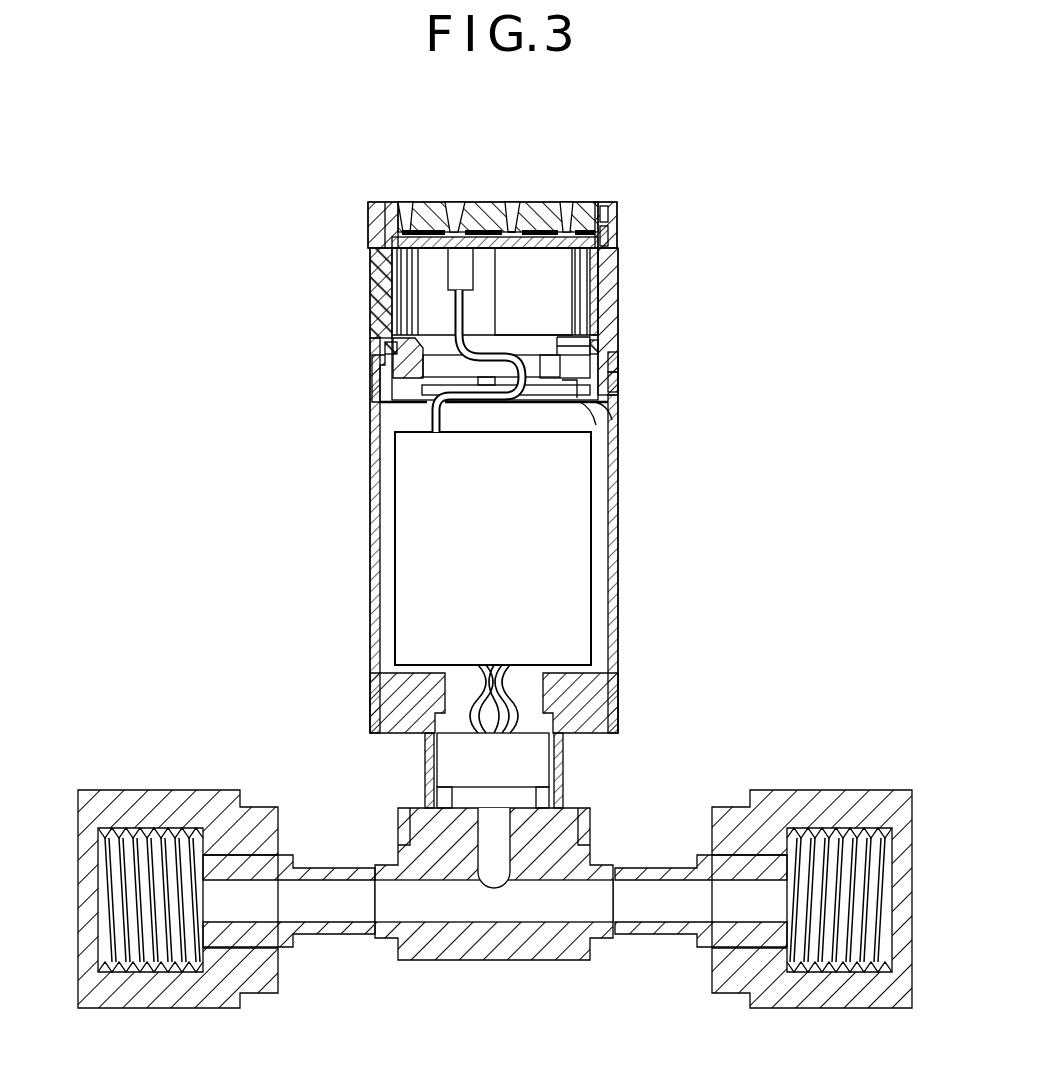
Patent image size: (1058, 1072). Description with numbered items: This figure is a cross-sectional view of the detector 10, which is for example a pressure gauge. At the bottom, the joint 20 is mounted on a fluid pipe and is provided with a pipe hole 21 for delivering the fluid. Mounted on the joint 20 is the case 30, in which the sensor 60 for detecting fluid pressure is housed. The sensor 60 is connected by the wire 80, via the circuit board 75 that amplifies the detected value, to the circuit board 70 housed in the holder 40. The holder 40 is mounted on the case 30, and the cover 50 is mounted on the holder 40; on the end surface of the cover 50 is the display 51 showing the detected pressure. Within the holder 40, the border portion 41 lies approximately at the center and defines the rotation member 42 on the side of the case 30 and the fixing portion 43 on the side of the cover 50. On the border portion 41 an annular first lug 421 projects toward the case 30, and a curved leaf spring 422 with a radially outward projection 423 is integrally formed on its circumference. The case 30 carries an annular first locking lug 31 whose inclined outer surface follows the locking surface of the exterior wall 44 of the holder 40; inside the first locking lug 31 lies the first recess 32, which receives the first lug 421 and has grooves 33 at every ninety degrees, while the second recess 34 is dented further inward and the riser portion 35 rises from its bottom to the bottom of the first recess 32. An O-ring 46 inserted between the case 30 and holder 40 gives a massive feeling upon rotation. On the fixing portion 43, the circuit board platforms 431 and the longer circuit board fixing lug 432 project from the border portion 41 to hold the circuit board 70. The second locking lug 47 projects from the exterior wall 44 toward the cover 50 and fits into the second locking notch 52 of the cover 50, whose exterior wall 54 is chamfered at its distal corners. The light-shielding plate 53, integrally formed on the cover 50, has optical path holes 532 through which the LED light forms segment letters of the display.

The detector 10 is at (636, 126).
The joint 20 is at (540, 960).
The pipe hole 21 is at (330, 912).
The case 30 is at (618, 541).
The first locking lug 31 is at (613, 362).
The first recess 32 is at (617, 416).
The grooves 33 is at (615, 380).
The second recess 34 is at (613, 423).
The riser portion 35 is at (400, 404).
The holder 40 is at (613, 287).
The border portion 41 is at (592, 340).
The rotation member 42 is at (470, 402).
The first lug 421 is at (372, 375).
The leaf spring 422 is at (545, 402).
The projection 423 is at (598, 354).
The fixing portion 43 is at (418, 302).
The circuit board platforms 431 is at (397, 323).
The circuit board fixing lug 432 is at (400, 288).
The exterior wall 44 is at (612, 263).
The O-ring 46 is at (388, 348).
The second locking lug 47 is at (604, 232).
The cover 50 is at (535, 202).
The display 51 is at (433, 202).
The second locking notch 52 is at (608, 203).
The light-shielding plate 53 is at (483, 202).
The optical path holes 532 is at (508, 202).
The exterior wall 54 is at (610, 214).
The sensor 60 is at (540, 770).
The circuit board 70 is at (372, 237).
The circuit board 75 is at (580, 633).
The wire 80 is at (407, 423).